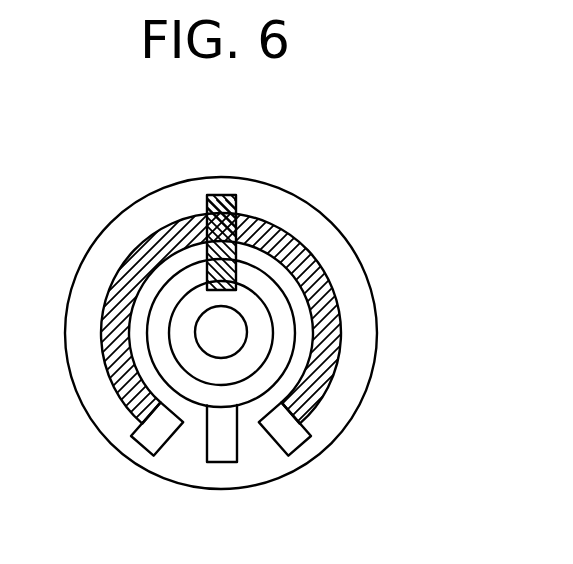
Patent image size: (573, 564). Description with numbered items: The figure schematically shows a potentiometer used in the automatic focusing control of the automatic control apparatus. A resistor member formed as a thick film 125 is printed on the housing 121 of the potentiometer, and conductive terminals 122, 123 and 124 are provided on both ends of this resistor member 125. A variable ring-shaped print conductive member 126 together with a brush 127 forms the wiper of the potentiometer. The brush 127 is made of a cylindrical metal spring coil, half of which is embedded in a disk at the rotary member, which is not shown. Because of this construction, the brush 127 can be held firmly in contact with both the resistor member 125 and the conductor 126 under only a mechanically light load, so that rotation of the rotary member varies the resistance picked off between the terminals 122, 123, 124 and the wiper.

The housing 121 is at (102, 220).
The conductive terminal 122 is at (150, 433).
The conductive terminal 123 is at (223, 453).
The conductive terminal 124 is at (290, 445).
The resistor member 125 is at (325, 357).
The ring-shaped print conductive member 126 is at (280, 310).
The brush 127 is at (222, 195).